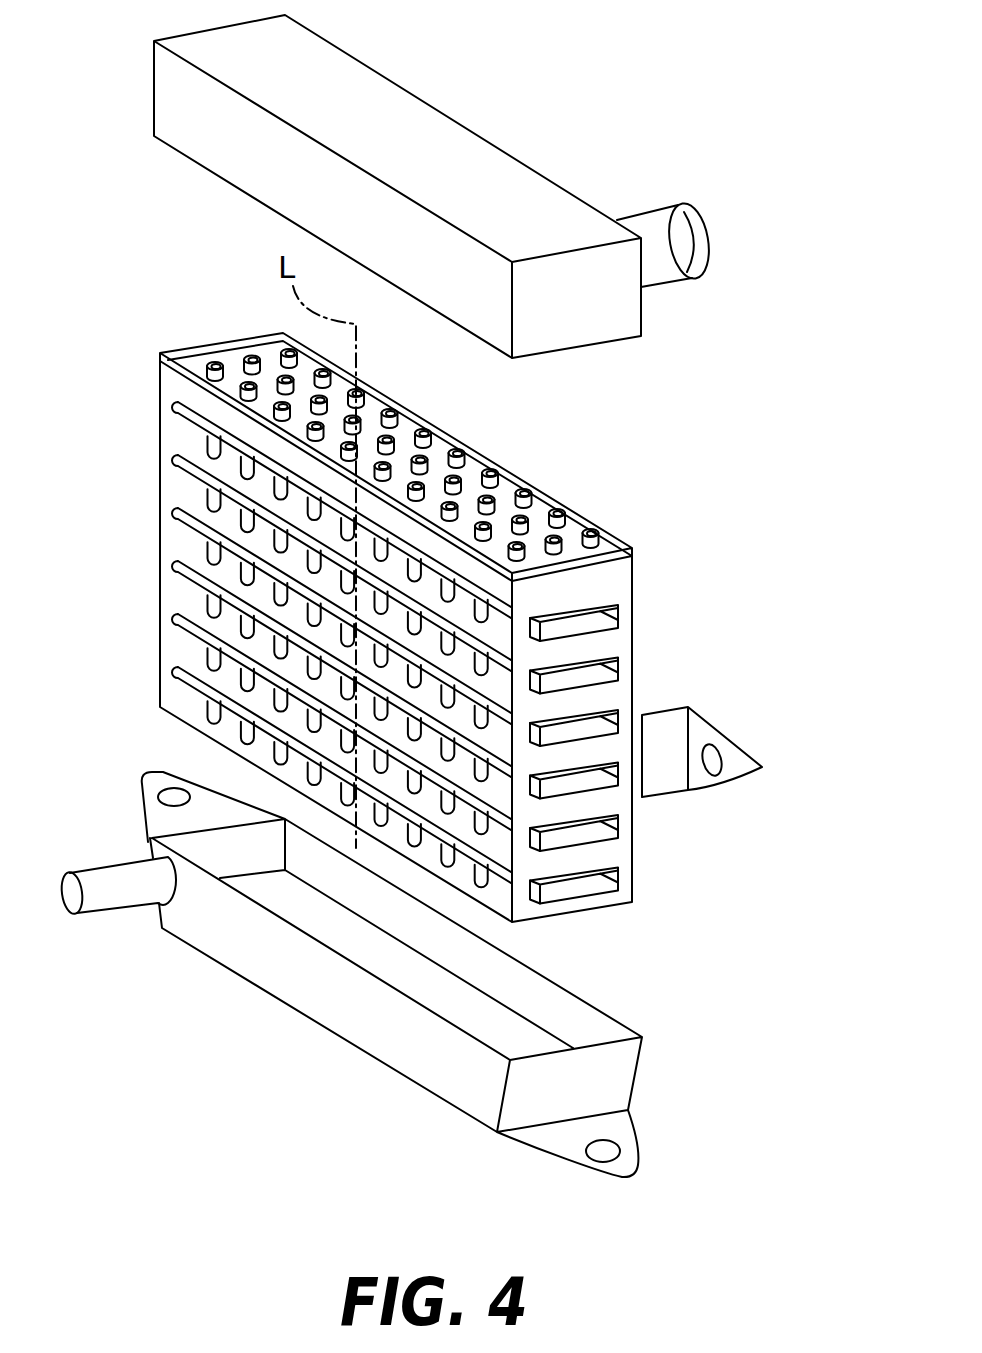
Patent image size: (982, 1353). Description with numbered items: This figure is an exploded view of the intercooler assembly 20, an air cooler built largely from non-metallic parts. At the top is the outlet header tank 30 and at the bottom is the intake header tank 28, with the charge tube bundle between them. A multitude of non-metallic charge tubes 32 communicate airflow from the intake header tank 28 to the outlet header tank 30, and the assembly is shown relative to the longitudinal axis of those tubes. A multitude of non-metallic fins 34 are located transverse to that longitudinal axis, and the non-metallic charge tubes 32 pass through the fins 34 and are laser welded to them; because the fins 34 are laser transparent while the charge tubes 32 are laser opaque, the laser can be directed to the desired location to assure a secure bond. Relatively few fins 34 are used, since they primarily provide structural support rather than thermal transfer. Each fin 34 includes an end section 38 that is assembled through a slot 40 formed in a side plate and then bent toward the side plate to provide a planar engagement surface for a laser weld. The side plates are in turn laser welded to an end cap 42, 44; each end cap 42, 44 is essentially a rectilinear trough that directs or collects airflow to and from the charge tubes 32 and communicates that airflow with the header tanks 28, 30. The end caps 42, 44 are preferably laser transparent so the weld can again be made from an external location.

The intercooler assembly 20 is at (744, 92).
The intake header tank 28 is at (273, 967).
The outlet header tank 30 is at (498, 155).
The non-metallic charge tubes 32 is at (433, 500).
The non-metallic fins 34 is at (178, 458).
The end section 38 is at (595, 625).
The slot 40 is at (613, 603).
The end cap 42 is at (602, 910).
The end cap 44 is at (470, 447).